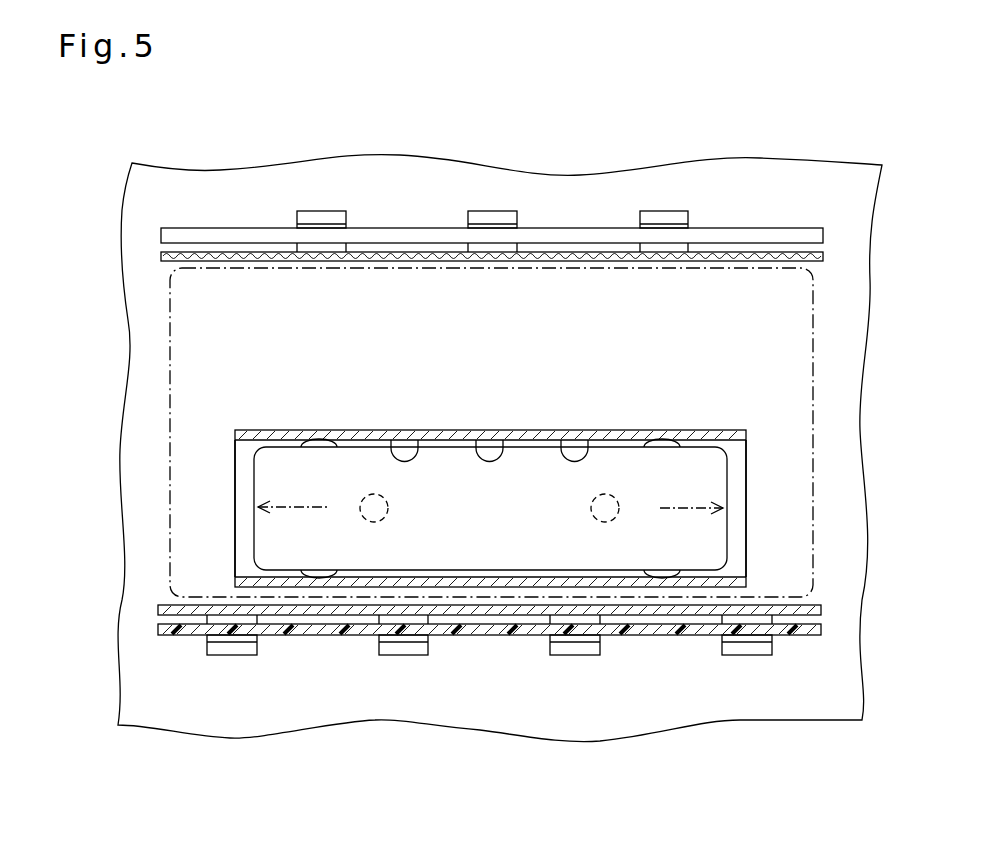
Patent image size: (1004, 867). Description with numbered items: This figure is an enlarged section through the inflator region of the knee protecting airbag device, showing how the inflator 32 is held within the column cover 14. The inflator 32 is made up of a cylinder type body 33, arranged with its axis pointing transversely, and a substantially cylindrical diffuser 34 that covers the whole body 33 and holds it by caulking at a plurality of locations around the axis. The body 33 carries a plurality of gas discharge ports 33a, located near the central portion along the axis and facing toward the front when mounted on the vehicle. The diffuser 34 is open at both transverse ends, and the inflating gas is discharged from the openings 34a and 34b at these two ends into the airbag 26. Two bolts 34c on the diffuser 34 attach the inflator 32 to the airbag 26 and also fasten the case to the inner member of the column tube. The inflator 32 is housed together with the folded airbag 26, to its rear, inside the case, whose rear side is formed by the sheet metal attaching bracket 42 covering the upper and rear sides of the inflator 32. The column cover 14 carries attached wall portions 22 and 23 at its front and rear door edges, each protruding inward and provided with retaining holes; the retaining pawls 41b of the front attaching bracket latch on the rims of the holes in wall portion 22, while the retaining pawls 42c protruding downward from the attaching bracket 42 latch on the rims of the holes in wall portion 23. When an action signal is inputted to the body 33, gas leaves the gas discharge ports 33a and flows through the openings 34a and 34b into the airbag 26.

The column cover 14 is at (853, 220).
The attached wall portion 22 is at (810, 238).
The attached wall portion 23 is at (475, 630).
The airbag 26 is at (813, 365).
The inflator 32 is at (713, 412).
The body 33 is at (712, 475).
The gas discharge ports 33a is at (575, 448).
The diffuser 34 is at (622, 430).
The opening 34a is at (245, 513).
The opening 34b is at (737, 517).
The bolts 34c is at (592, 513).
The retaining pawls 41b is at (321, 215).
The attaching bracket 42 is at (787, 602).
The retaining pawls 42c is at (232, 655).